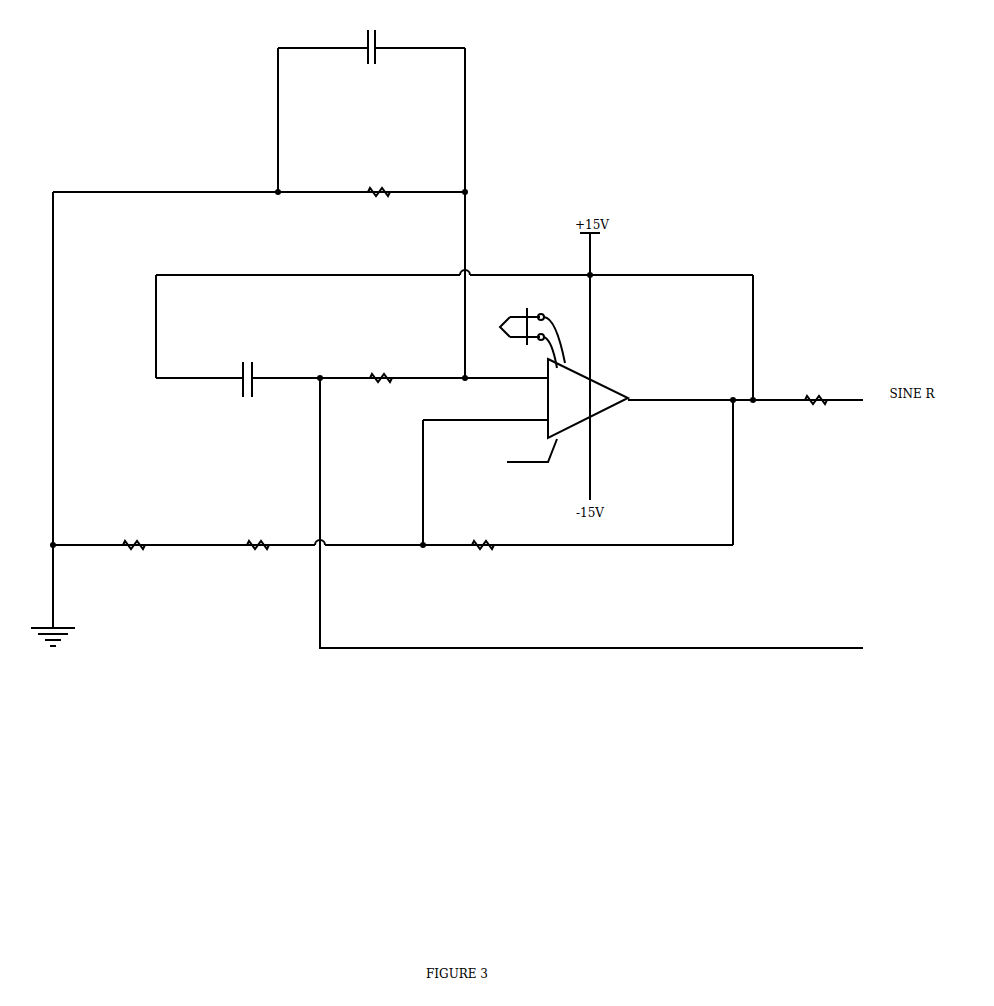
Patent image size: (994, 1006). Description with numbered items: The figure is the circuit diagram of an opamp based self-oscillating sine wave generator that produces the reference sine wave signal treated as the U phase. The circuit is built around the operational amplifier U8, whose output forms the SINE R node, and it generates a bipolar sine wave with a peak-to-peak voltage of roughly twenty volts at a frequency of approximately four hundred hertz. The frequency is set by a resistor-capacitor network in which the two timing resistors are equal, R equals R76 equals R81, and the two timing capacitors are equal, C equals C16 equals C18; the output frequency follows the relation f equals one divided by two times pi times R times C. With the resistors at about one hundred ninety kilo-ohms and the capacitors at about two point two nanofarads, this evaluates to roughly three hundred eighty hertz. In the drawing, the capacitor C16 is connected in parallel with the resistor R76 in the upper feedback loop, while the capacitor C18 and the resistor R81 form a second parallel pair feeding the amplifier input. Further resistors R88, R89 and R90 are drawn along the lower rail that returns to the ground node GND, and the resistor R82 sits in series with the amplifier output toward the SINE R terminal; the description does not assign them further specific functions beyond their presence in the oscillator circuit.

The capacitor C16 is at (386, 78).
The resistor R76 is at (374, 205).
The capacitor C18 is at (264, 409).
The resistor R81 is at (377, 391).
The resistor 200E R88 is at (130, 557).
The resistor 33.6K R89 is at (255, 557).
The resistor 68K R90 is at (480, 557).
The resistor 470E R82 is at (812, 412).
The operational amplifier TLE2061MD U8 is at (597, 382).
The ground GND is at (53, 649).